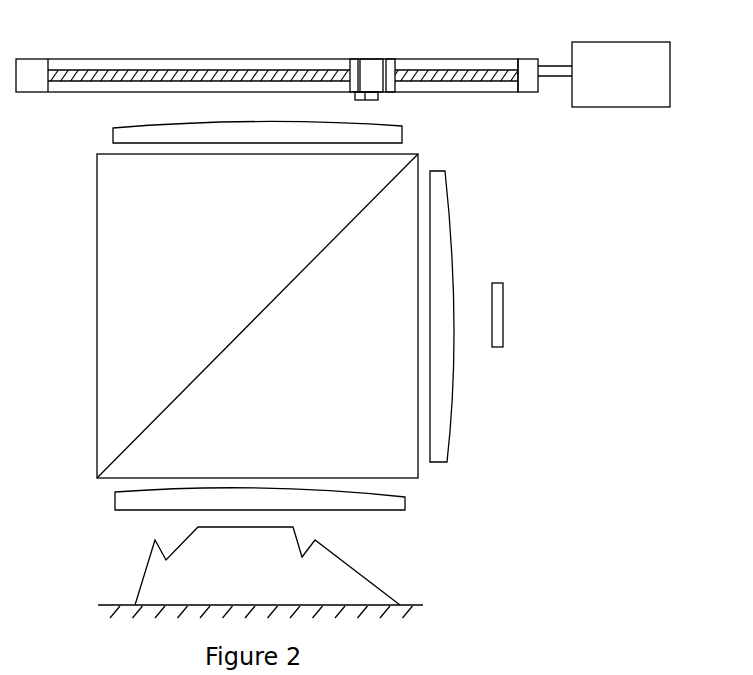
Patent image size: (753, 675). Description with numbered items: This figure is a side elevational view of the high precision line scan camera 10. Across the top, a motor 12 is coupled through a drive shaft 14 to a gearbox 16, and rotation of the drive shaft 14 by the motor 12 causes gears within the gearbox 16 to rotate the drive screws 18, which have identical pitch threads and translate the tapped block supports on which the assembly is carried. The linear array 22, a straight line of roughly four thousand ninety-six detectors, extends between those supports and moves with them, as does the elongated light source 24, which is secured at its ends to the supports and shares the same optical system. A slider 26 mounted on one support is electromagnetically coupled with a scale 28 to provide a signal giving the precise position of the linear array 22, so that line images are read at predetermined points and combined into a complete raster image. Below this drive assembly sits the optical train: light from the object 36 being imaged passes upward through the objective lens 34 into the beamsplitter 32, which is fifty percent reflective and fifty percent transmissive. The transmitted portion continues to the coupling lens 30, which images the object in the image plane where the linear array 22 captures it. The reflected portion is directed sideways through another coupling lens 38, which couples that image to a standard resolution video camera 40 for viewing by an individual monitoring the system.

The line scan camera 10 is at (576, 408).
The motor 12 is at (657, 60).
The drive shaft 14 is at (543, 76).
The gearbox 16 is at (530, 62).
The drive screws 18 is at (231, 78).
The linear array 22 is at (379, 96).
The elongated light source 24 is at (360, 97).
The slider 26 is at (389, 63).
The scale 28 is at (449, 64).
The coupling lens 30 is at (118, 133).
The beamsplitter 32 is at (123, 232).
The objective lens 34 is at (392, 502).
The object 36 is at (330, 582).
The coupling lens 38 is at (442, 449).
The camera 40 is at (497, 342).